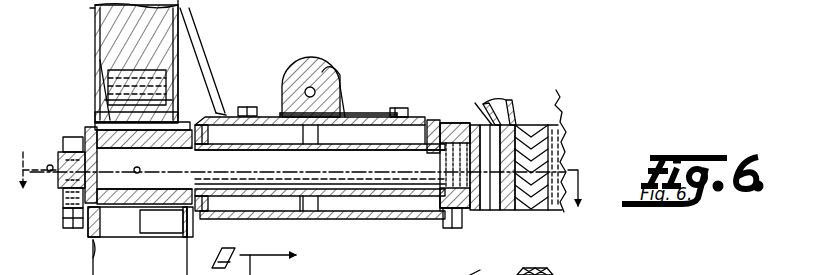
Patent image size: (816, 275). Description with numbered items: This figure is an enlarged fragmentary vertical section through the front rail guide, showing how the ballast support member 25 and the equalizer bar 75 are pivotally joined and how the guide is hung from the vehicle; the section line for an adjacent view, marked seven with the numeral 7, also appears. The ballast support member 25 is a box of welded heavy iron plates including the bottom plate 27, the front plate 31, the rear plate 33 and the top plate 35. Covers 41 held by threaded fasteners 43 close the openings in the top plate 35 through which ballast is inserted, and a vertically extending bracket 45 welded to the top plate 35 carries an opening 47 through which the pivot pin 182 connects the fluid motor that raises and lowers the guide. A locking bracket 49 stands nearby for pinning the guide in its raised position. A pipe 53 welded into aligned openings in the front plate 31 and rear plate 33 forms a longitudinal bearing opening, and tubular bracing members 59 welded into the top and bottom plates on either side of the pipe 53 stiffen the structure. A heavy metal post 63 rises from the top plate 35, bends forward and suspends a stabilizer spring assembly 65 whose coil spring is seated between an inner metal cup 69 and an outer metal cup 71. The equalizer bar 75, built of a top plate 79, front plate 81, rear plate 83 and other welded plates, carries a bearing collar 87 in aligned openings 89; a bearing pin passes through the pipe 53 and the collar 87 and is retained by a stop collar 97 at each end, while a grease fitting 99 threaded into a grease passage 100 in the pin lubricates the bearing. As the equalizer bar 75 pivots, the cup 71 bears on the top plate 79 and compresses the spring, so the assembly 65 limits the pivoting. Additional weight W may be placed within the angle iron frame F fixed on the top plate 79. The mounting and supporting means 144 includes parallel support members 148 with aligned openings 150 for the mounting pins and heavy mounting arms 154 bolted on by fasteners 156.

The angle iron frame F is at (82, 17).
The additional weight W is at (105, 66).
The stabilizer spring assembly 65 is at (110, 48).
The metal cup 69 is at (100, 78).
The metal cup 71 is at (105, 108).
The top plate 79 is at (110, 112).
The bearing collar 87 is at (94, 128).
The metal post 63 is at (206, 45).
The threaded fasteners 43 is at (247, 107).
The locking bracket 49 is at (253, 107).
The opening 47 is at (305, 88).
The pivot pin 182 is at (330, 72).
The bracket 45 is at (343, 90).
The covers 41 is at (374, 115).
The top plate 35 is at (400, 108).
The stop collar 97 is at (62, 202).
The mounting and supporting means 144 is at (512, 99).
The mounting arms 154 is at (556, 112).
The grease fitting 99 is at (60, 160).
The grease passage 100 is at (88, 175).
The aligned openings 89 is at (142, 172).
The front plate 81 is at (64, 218).
The equalizer bar 75 is at (92, 245).
The bottom plate 27 is at (92, 262).
The rear plate 83 is at (190, 222).
The front plate 31 is at (208, 132).
The pipe 53 is at (278, 151).
The tubular bracing members 59 is at (320, 130).
The rear plate 33 is at (426, 150).
The ballast support member 25 is at (384, 222).
The support members 148 is at (478, 212).
The fasteners 156 is at (507, 274).
The aligned openings 150 is at (474, 272).
The section line 7- 7 is at (20, 115).